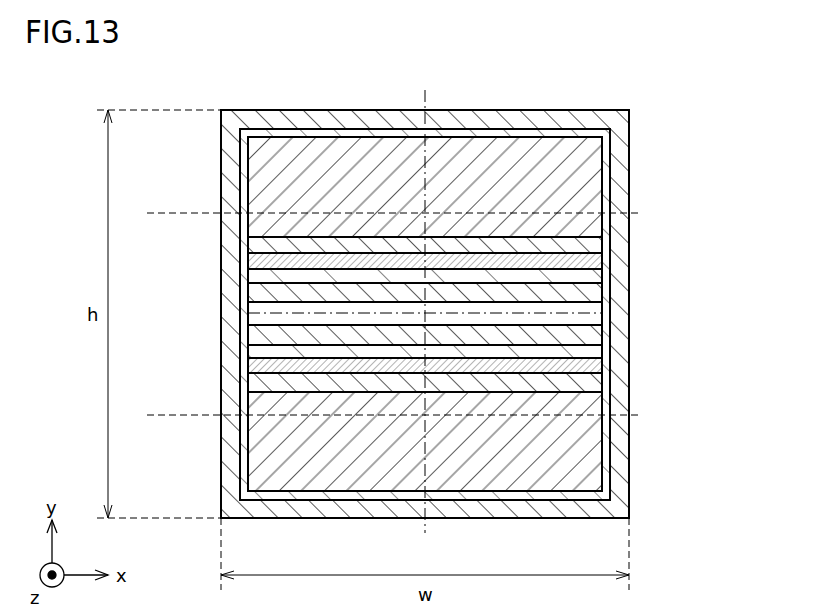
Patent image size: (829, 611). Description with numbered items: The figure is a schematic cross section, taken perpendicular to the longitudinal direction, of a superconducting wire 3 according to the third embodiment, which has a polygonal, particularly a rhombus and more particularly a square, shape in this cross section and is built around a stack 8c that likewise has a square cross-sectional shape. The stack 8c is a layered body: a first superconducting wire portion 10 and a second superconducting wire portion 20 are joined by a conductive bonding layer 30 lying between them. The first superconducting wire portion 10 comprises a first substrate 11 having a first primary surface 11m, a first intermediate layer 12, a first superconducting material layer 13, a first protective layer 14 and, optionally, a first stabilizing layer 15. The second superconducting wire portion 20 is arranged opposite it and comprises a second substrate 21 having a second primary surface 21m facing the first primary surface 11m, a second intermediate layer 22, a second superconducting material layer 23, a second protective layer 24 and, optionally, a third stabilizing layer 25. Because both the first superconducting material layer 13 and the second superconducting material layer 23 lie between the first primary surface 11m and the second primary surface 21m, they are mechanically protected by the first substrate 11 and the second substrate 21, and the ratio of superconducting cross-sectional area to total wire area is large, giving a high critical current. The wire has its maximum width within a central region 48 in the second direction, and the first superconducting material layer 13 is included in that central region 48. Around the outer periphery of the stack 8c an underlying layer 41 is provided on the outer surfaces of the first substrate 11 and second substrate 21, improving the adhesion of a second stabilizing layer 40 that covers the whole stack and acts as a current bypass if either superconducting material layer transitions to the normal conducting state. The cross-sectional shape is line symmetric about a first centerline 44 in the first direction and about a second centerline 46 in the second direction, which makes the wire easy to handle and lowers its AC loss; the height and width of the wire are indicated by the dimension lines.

The superconducting wire 3 is at (672, 84).
The second stabilizing layer 40 is at (507, 122).
The underlying layer 41 is at (522, 133).
The second primary surface 21m is at (518, 203).
The second substrate 21 is at (553, 230).
The second intermediate layer 22 is at (528, 244).
The second superconducting material layer 23 is at (540, 260).
The second protective layer 24 is at (550, 270).
The third stabilizing layer 25 is at (558, 297).
The second superconducting wire portion 20 is at (703, 132).
The conductive bonding layer 30 is at (580, 309).
The first stabilizing layer 15 is at (556, 334).
The first protective layer 14 is at (548, 354).
The first superconducting material layer 13 is at (538, 364).
The first intermediate layer 12 is at (533, 378).
The first substrate 11 is at (527, 390).
The first primary surface 11m is at (558, 488).
The first superconducting wire portion 10 is at (703, 338).
The stack 8c is at (748, 190).
The second centerline 46 is at (234, 315).
The central region 48 is at (158, 213).
The first centerline 44 is at (425, 326).